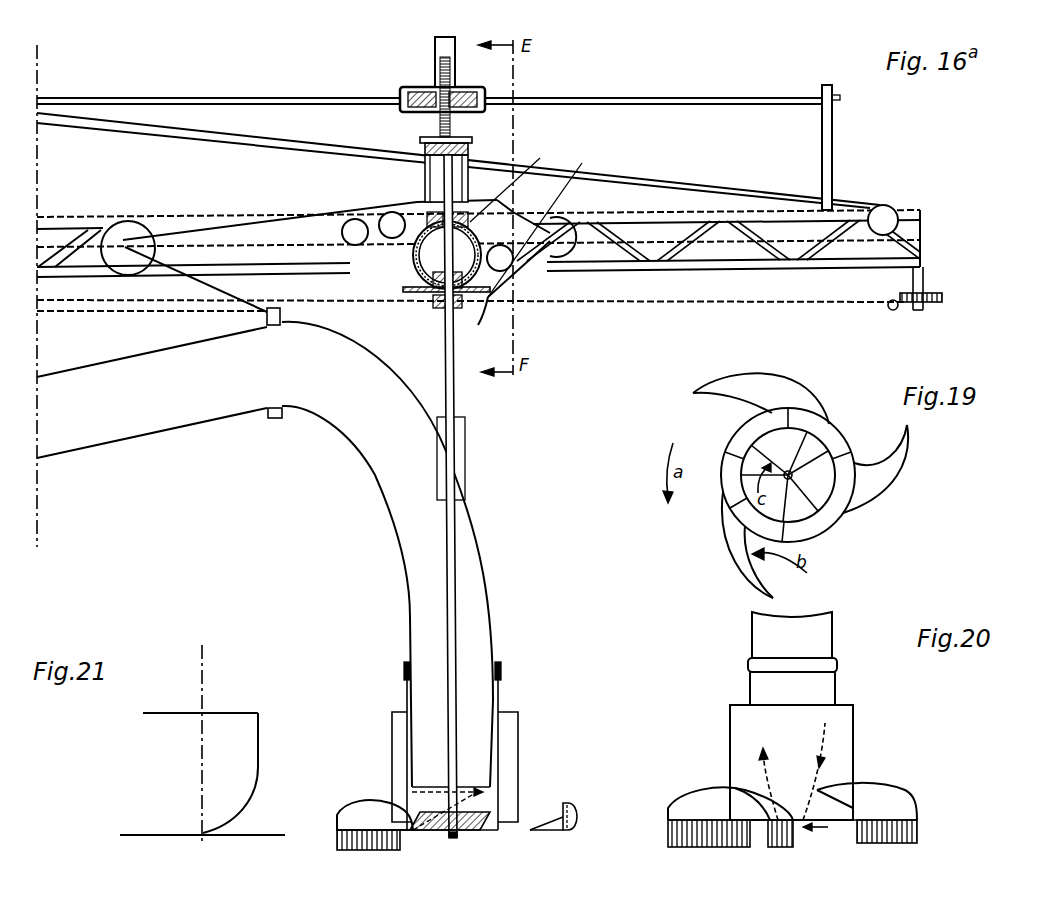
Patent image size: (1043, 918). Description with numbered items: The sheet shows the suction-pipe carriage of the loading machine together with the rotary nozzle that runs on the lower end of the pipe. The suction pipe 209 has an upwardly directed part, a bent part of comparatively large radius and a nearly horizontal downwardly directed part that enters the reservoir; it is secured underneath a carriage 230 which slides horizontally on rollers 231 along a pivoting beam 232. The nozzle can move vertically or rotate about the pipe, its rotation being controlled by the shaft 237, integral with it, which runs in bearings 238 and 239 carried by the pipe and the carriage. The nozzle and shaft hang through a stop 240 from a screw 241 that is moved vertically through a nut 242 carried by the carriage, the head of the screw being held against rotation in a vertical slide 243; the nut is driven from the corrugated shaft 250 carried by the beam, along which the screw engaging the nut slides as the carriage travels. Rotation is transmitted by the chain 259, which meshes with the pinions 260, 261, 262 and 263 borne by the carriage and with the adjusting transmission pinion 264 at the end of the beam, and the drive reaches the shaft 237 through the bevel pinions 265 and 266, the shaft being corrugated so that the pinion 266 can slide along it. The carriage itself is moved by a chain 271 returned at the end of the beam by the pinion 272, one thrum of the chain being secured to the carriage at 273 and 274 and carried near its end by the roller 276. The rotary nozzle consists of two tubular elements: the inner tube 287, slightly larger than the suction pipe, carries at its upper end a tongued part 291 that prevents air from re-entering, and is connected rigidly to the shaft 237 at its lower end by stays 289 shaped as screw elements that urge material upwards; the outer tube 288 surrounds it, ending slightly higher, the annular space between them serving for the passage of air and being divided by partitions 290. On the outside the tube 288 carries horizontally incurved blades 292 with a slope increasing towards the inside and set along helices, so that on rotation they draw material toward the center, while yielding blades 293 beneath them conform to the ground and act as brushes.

In FIG. 16A, the suction pipe 209 is at (163, 413).
In FIG. 16A, the carriage 230 is at (303, 263).
In FIG. 16A, the rollers 231 is at (132, 228).
In FIG. 16A, the beam 232 is at (63, 225).
In FIG. 16A, the shaft 237 is at (455, 409).
In FIG. 21, the shaft 237 is at (203, 692).
In FIG. 16A, the bearing 238 is at (460, 462).
In FIG. 16A, the bearing 239 is at (519, 182).
In FIG. 16A, the stop 240 is at (458, 147).
In FIG. 16A, the screw 241 is at (437, 60).
In FIG. 16A, the nut 242 is at (410, 88).
In FIG. 16A, the vertical slide 243 is at (428, 146).
In FIG. 16A, the corrugated shaft 250 is at (247, 101).
In FIG. 16A, the chain 259 is at (138, 303).
In FIG. 16A, the pinion 260 is at (415, 257).
In FIG. 16A, the pinion 261 is at (500, 265).
In FIG. 16A, the pinion 262 is at (392, 225).
In FIG. 16A, the pinion 263 is at (352, 226).
In FIG. 16A, the adjusting transmission pinion 264 is at (887, 217).
In FIG. 16A, the bevel pinion 265 is at (550, 222).
In FIG. 16A, the bevel pinion 266 is at (412, 288).
In FIG. 16A, the chain 271 is at (637, 305).
In FIG. 16A, the pinion 272 is at (937, 291).
In FIG. 16A, the chain attachment point 273 is at (267, 320).
In FIG. 16A, the chain attachment point 274 is at (486, 314).
In FIG. 16A, the roller 276 is at (891, 311).
In FIG. 16A, the tube 287 is at (500, 700).
In FIG. 21, the tube 287 is at (225, 725).
In FIG. 19, the tube 287 is at (807, 523).
In FIG. 20, the tube 287 is at (837, 683).
In FIG. 16A, the tube 288 is at (520, 764).
In FIG. 19, the tube 288 is at (830, 421).
In FIG. 20, the tube 288 is at (853, 723).
In FIG. 16A, the stays 289 is at (420, 818).
In FIG. 19, the stays 289 is at (815, 448).
In FIG. 21, the hub 290 is at (255, 768).
In FIG. 19, the hub 290 is at (780, 413).
In FIG. 16A, the tongued part 291 is at (405, 669).
In FIG. 20, the tongued part 291 is at (835, 662).
In FIG. 16A, the blades 292 is at (350, 820).
In FIG. 19, the blades 292 is at (867, 503).
In FIG. 20, the blades 292 is at (887, 802).
In FIG. 20, the yielding blades 293 is at (907, 830).